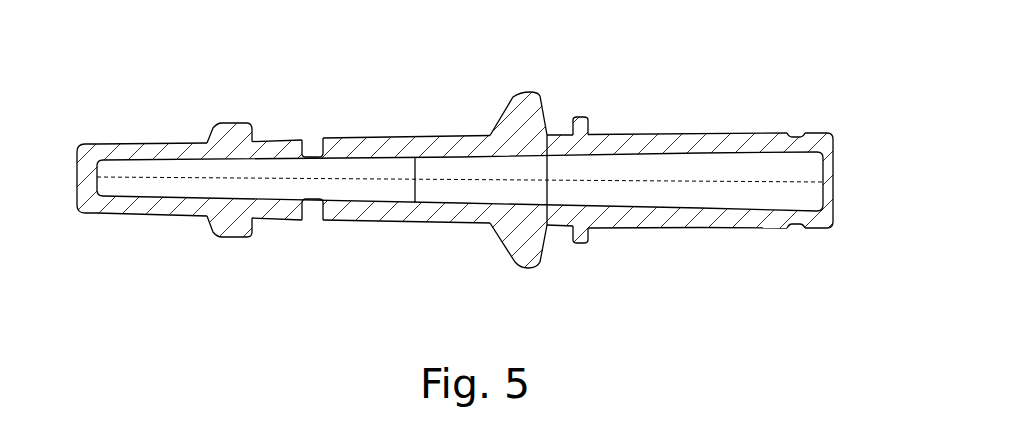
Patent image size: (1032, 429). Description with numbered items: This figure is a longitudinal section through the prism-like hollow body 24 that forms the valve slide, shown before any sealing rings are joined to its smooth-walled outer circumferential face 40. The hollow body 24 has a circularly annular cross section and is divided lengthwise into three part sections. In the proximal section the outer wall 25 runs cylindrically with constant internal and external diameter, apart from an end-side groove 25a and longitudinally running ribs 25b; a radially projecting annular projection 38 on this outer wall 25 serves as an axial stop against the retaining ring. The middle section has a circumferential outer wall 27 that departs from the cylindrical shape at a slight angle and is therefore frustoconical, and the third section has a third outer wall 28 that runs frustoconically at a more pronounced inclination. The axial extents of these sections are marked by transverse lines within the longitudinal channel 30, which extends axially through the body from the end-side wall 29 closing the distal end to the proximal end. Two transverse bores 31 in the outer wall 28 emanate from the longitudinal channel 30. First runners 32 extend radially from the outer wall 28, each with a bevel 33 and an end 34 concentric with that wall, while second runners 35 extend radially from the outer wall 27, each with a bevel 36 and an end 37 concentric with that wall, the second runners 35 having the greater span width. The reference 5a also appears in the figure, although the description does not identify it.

The tube end portion 5a is at (747, 230).
The hollow body 24 is at (643, 130).
The outer wall 25 is at (655, 232).
The end-side groove 25a is at (792, 137).
The longitudinally running ribs 25b is at (747, 127).
The circumferential outer wall 27 is at (398, 150).
The third outer wall 28 is at (162, 142).
The end-side wall 29 is at (76, 190).
The longitudinal channel 30 is at (145, 185).
The transverse bores 31 is at (303, 140).
The first runners 32 is at (230, 237).
The bevel 33 is at (218, 125).
The end 34 is at (235, 122).
The second runners 35 is at (522, 112).
The bevel 36 is at (510, 253).
The end 37 is at (527, 268).
The annular projection 38 is at (580, 117).
The outer circumferential face 40 is at (410, 224).